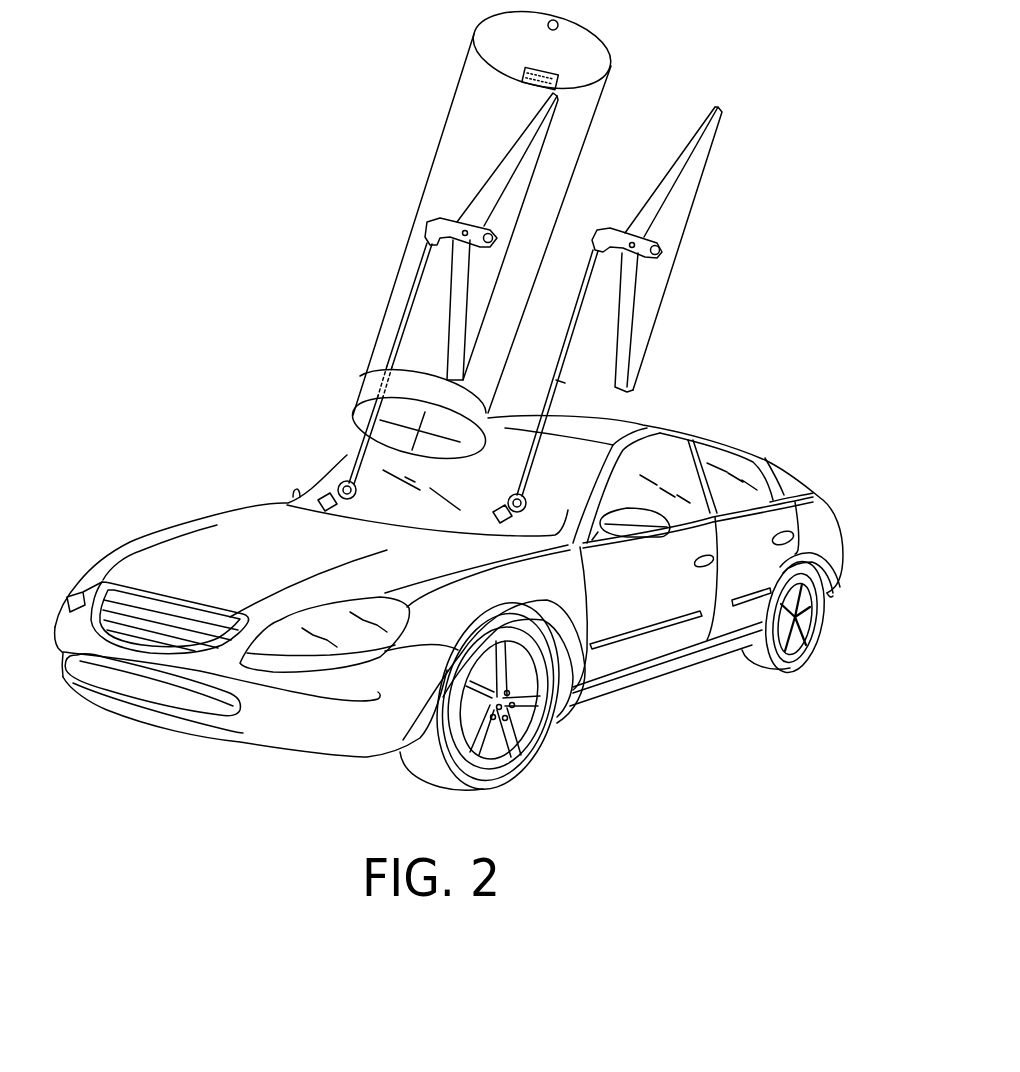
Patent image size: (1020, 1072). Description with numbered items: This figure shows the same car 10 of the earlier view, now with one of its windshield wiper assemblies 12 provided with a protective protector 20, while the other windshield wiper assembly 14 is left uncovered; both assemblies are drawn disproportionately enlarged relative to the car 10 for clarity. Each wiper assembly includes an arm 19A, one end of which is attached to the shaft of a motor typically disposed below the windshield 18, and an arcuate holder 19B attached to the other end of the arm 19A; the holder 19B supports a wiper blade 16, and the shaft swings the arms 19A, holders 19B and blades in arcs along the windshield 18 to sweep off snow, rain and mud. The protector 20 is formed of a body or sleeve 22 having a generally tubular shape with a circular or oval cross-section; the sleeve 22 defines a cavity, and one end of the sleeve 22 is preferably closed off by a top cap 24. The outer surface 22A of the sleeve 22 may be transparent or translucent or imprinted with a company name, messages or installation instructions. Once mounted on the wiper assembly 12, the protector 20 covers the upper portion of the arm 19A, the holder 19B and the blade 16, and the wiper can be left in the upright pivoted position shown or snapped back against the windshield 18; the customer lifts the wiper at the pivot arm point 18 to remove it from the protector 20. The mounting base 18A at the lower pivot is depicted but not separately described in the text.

The car 10 is at (763, 458).
The windshield wiper assembly 12 is at (477, 207).
The windshield wiper assembly 14 is at (683, 253).
The wiper blade 16 is at (527, 162).
The windshield 18 is at (338, 477).
The mounting foot 18A is at (485, 517).
The arm 19A is at (392, 330).
The arcuate holder 19B is at (497, 162).
The protector 20 is at (455, 103).
The sleeve 22 is at (415, 258).
The outer surface 22A is at (487, 72).
The top cap 24 is at (573, 53).